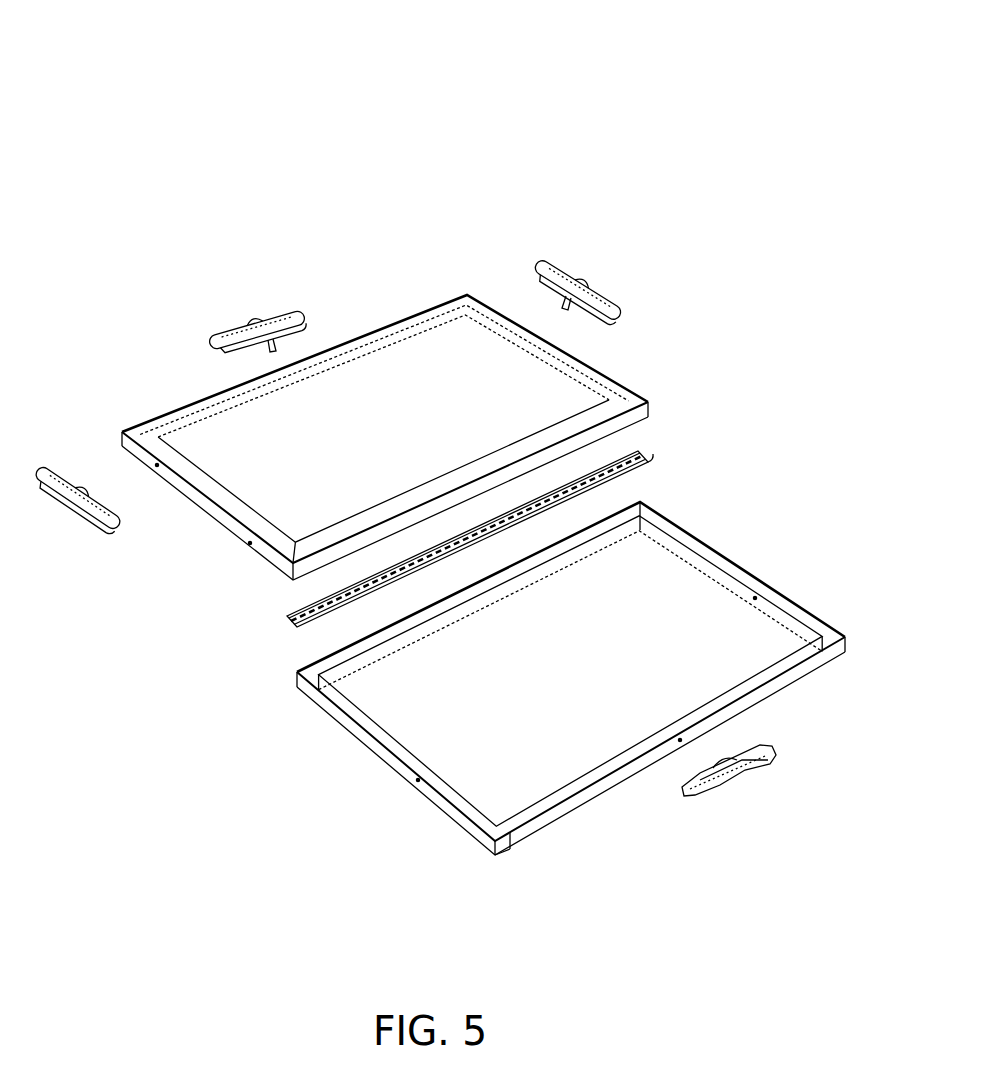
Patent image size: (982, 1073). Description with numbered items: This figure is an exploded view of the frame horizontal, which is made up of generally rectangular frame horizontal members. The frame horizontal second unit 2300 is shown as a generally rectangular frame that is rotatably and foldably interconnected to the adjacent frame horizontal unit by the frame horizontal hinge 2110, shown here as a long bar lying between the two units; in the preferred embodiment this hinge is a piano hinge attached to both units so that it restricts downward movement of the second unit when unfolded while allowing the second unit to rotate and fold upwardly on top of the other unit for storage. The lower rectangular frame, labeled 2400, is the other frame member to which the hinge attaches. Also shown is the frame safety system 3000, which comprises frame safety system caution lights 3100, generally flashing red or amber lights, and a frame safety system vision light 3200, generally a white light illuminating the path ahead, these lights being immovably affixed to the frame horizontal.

The frame safety system 3000 is at (488, 184).
The frame horizontal hinge 2110 is at (648, 457).
The frame horizontal second unit 2300 is at (227, 518).
The lower frame 2400 is at (362, 740).
The frame safety system caution light 3100 is at (578, 270).
The frame safety system vision light 3200 is at (233, 327).